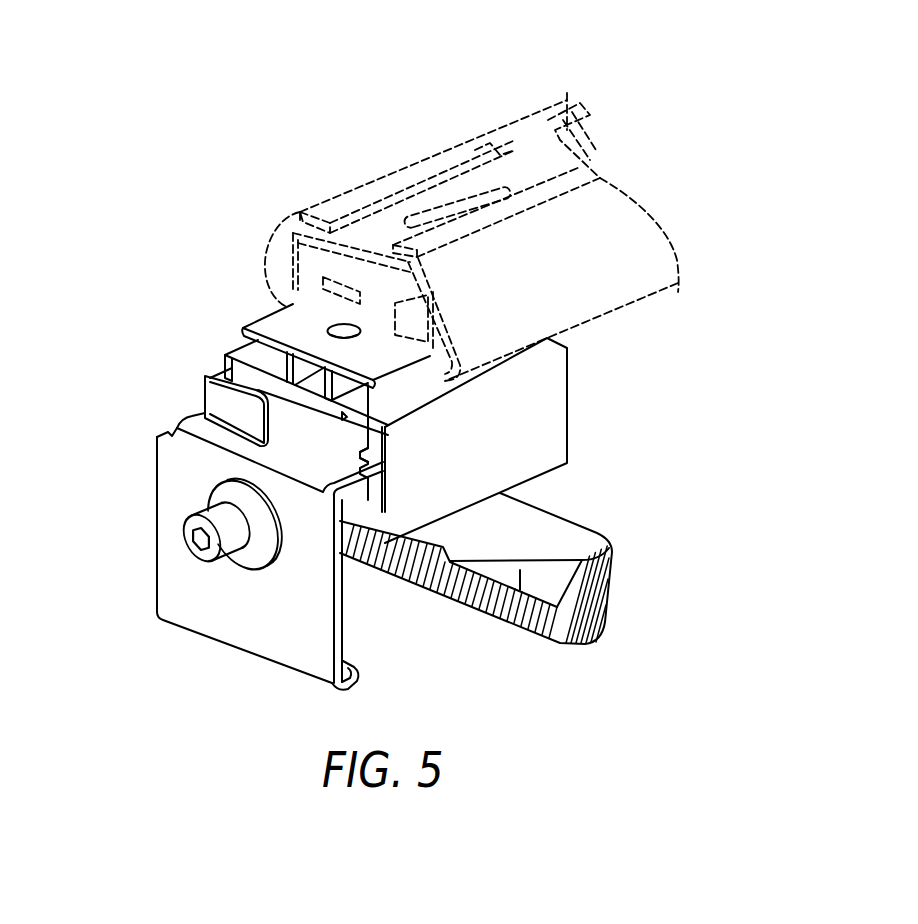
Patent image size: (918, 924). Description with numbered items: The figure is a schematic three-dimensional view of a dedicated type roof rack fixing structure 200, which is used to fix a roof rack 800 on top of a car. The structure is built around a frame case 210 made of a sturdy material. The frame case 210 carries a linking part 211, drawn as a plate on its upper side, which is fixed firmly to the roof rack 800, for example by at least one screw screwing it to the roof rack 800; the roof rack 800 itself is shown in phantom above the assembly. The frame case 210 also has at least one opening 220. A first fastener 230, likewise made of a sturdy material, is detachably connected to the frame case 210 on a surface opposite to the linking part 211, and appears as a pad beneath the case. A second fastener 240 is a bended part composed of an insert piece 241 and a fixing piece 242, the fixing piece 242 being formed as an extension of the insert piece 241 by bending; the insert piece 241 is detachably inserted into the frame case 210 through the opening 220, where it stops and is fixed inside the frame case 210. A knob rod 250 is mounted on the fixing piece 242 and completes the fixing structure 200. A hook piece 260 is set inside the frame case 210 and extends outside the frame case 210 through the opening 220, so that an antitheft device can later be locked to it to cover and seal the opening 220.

The roof rack fixing structure 200 is at (98, 43).
The roof rack 800 is at (379, 182).
The frame case 210 is at (552, 398).
The linking part 211 is at (265, 323).
The opening 220 is at (337, 436).
The first fastener 230 is at (593, 600).
The second fastener 240 is at (343, 622).
The insert piece 241 is at (198, 418).
The fixing piece 242 is at (288, 636).
The knob rod 250 is at (212, 553).
The hook piece 260 is at (220, 382).